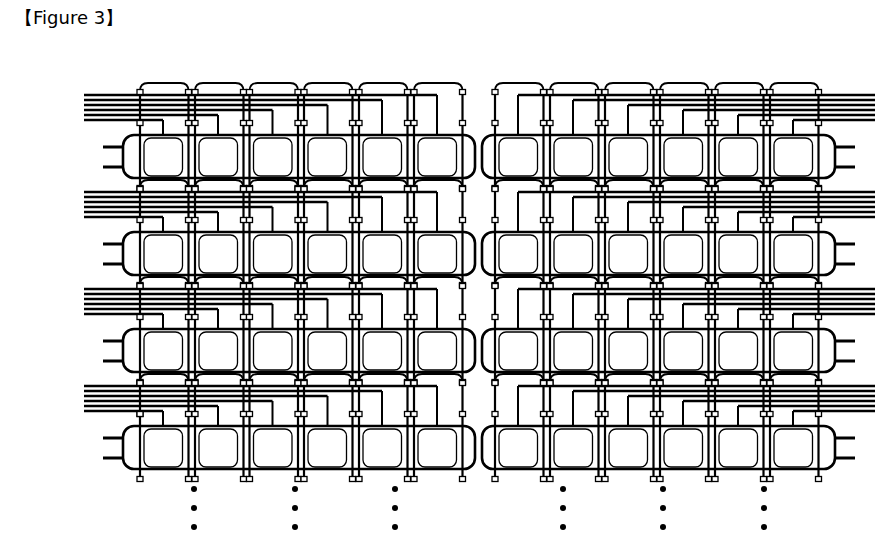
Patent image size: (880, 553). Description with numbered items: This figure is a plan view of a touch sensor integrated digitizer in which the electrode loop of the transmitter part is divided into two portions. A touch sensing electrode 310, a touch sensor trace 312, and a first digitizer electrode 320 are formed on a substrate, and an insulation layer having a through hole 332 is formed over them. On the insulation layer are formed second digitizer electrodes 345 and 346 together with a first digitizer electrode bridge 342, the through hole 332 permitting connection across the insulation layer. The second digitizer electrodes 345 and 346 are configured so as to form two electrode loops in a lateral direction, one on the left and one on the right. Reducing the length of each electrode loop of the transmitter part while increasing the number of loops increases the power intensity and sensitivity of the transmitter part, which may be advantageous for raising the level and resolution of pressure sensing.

The touch sensing electrode 310 is at (223, 460).
The touch sensor trace 312 is at (84, 409).
The first digitizer electrode 320 is at (135, 470).
The through hole 332 is at (136, 381).
The first digitizer electrode bridge 342 is at (133, 419).
The second digitizer electrode 345 is at (332, 470).
The second digitizer electrode 346 is at (517, 470).